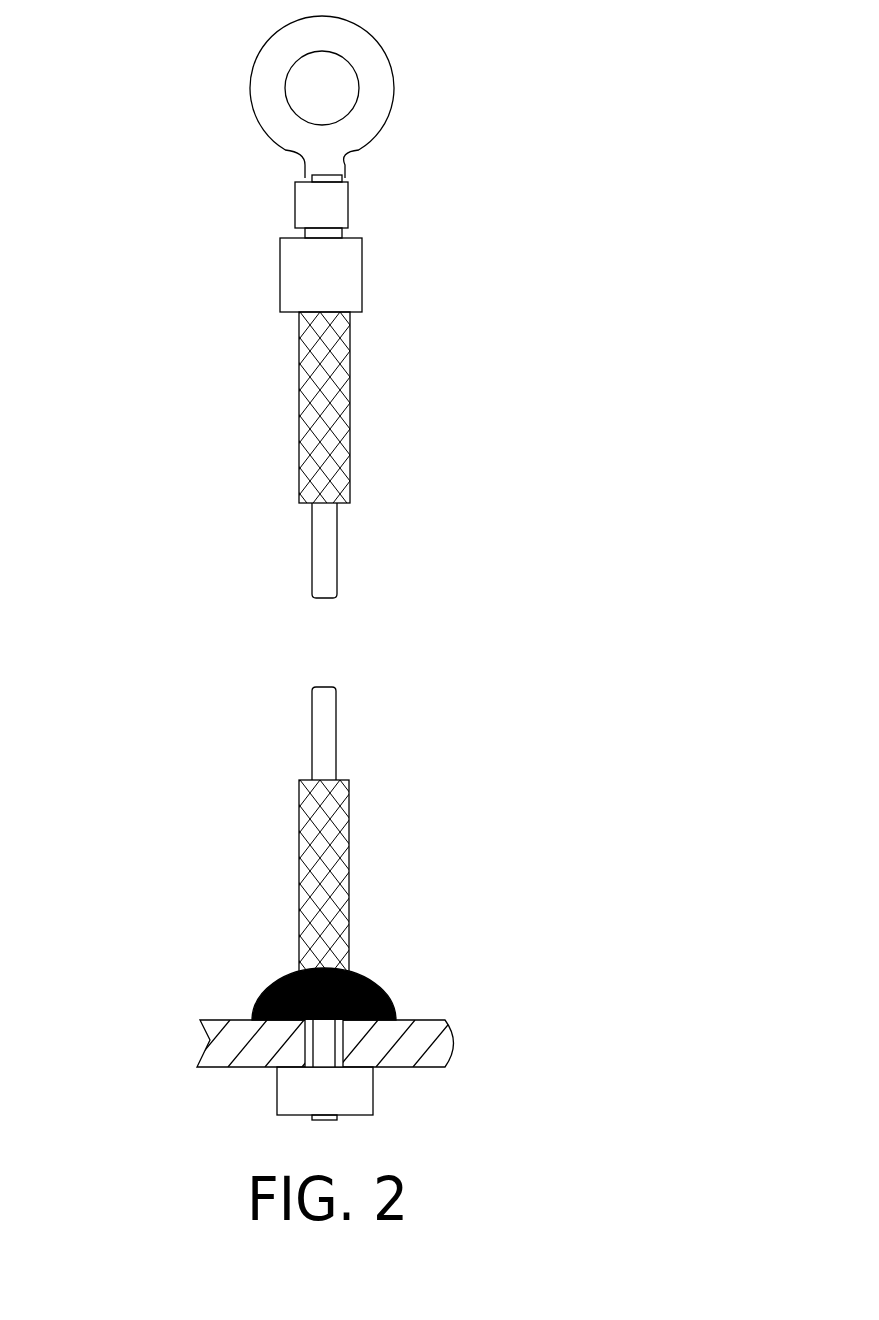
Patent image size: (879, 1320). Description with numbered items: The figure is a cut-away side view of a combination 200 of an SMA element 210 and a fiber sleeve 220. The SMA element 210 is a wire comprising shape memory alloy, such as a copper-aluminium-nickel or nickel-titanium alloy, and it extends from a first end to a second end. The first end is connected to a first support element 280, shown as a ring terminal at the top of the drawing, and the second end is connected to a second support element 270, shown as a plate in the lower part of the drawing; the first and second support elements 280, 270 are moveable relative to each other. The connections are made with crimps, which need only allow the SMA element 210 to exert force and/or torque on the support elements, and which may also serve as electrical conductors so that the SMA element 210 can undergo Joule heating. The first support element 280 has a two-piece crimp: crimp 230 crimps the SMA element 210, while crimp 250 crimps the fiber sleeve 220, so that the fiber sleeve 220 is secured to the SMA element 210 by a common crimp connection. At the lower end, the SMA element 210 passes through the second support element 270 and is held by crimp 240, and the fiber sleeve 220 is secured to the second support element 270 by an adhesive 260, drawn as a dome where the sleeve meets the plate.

The combination 200 is at (147, 100).
The first support element 280 is at (382, 68).
The crimp 230 is at (330, 202).
The crimp 250 is at (340, 277).
The SMA element 210 is at (327, 719).
The fiber sleeve 220 is at (327, 843).
The adhesive 260 is at (367, 982).
The second support element 270 is at (432, 1032).
The crimp 240 is at (352, 1090).